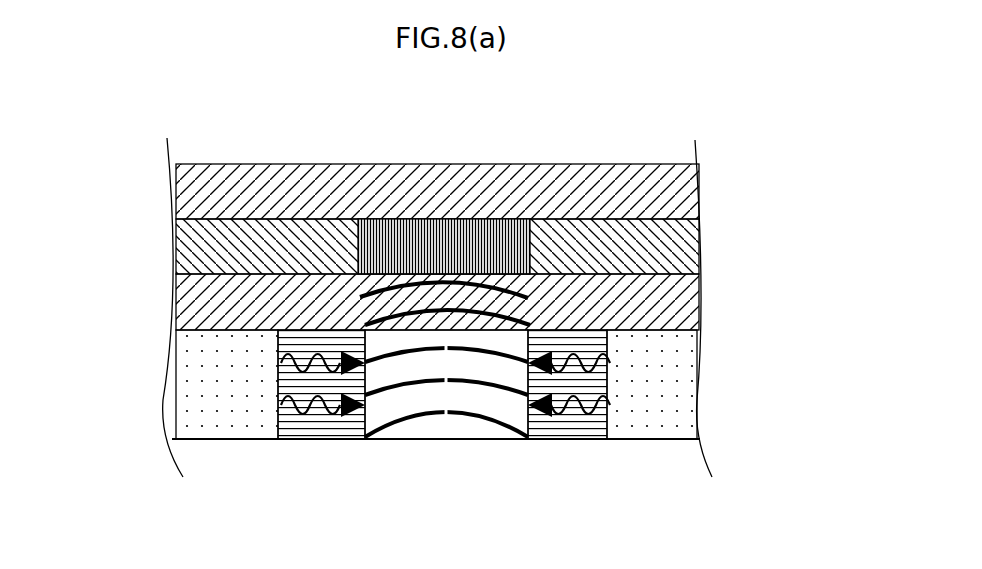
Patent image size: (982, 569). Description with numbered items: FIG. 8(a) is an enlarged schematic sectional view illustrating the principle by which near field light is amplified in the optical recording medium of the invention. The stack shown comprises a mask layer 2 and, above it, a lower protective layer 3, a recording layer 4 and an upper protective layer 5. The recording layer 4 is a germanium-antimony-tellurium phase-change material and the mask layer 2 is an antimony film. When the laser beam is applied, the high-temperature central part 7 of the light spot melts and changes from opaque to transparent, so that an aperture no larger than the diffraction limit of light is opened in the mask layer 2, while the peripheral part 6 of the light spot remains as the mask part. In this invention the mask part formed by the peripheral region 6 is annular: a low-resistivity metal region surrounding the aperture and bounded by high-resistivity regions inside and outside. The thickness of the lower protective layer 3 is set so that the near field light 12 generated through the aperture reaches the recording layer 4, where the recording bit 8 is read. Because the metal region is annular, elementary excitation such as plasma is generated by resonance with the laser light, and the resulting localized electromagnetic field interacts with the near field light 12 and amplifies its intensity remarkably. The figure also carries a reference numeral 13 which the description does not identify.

The mask layer 2 is at (177, 412).
The lower protective layer 3 is at (168, 302).
The recording layer 4 is at (175, 252).
The upper protective layer 5 is at (177, 198).
The peripheral part 6 is at (578, 440).
The central part 7 is at (383, 440).
The recording bit 8 is at (513, 200).
The near field light 12 is at (460, 383).
The emitting regions 13 is at (270, 408).